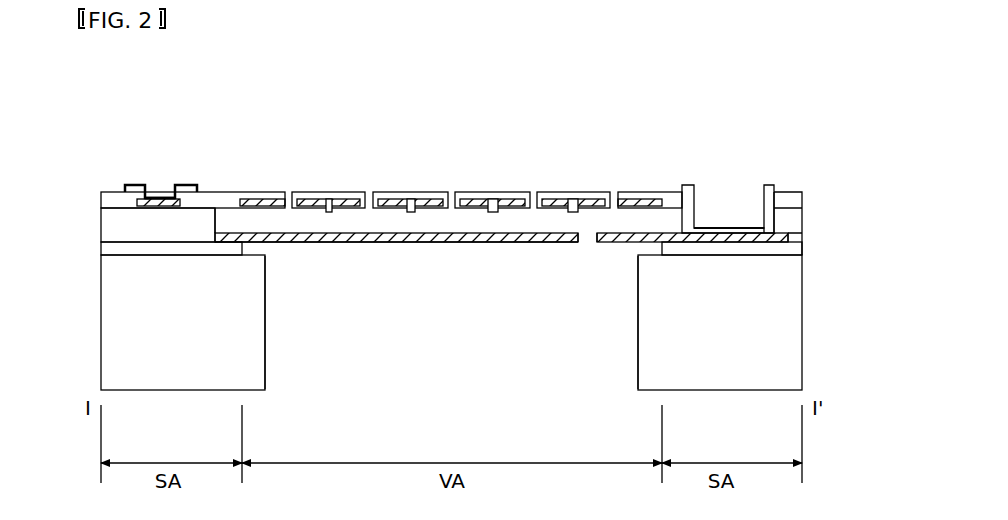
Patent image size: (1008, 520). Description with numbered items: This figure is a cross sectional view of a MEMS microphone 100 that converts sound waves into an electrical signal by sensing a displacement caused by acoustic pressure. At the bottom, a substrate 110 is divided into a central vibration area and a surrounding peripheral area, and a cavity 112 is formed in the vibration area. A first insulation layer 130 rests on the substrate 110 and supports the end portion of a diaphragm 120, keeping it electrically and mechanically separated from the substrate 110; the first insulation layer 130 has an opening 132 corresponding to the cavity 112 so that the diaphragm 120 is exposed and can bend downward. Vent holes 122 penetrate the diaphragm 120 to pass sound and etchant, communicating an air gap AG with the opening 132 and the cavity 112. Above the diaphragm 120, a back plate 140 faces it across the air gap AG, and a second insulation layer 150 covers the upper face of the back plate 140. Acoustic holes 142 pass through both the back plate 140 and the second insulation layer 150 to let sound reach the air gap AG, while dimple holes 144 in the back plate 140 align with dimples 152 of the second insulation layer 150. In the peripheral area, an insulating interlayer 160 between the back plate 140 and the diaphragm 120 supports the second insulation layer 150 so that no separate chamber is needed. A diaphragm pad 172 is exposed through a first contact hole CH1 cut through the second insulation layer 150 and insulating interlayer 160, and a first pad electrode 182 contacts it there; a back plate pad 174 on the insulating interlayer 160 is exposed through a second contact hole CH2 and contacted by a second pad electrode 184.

The MEMS microphone 100 is at (653, 164).
The substrate 110 is at (787, 323).
The cavity 112 is at (369, 344).
The diaphragm 120 is at (502, 243).
The vent holes 122 is at (585, 237).
The first insulation layer 130 is at (788, 248).
The opening 132 is at (402, 246).
The back plate 140 is at (632, 190).
The acoustic holes 142 is at (535, 205).
The dimple holes 144 is at (412, 208).
The second insulation layer 150 is at (260, 191).
The dimples 152 is at (330, 213).
The insulating interlayer 160 is at (787, 222).
The diaphragm pad 172 is at (728, 234).
The back plate pad 174 is at (153, 208).
The first pad electrode 182 is at (772, 186).
The second pad electrode 184 is at (178, 187).
The first contact hole CH1 is at (727, 205).
The second contact hole CH2 is at (163, 189).
The air gap AG is at (550, 224).